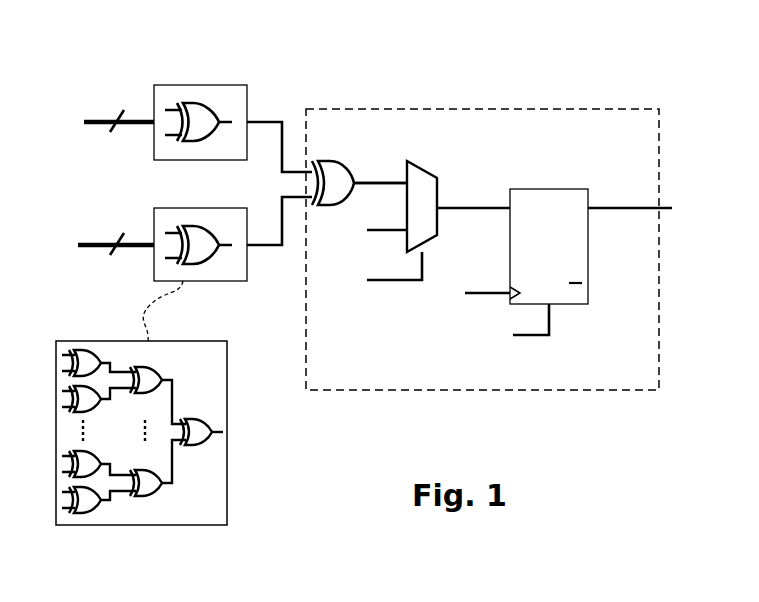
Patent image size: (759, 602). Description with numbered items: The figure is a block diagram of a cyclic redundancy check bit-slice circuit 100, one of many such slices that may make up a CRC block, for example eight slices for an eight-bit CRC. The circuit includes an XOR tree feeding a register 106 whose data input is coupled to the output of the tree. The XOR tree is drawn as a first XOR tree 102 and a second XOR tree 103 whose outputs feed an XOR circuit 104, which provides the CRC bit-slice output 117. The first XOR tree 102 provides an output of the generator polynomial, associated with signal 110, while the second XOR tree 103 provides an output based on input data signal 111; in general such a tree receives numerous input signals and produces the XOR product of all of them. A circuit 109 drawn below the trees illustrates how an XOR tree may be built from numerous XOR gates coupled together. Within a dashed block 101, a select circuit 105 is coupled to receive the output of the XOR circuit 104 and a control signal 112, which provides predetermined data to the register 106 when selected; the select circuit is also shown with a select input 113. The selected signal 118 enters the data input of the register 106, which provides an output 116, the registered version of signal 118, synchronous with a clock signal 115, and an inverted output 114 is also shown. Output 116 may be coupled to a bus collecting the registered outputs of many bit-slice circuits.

The CRC bit-slice circuit 100 is at (716, 52).
The dashed block 101 is at (512, 109).
The first XOR tree 102 is at (222, 85).
The second XOR tree 103 is at (210, 208).
The XOR circuit 104 is at (328, 166).
The select circuit 105 is at (437, 178).
The register 106 is at (518, 189).
The circuit 109 is at (227, 452).
The signal 110 is at (98, 130).
The signal 111 is at (94, 253).
The signal 112 is at (382, 230).
The multiplexer select input 113 is at (390, 282).
The inverted output 114 is at (538, 335).
The clock signal 115 is at (482, 293).
The output 116 is at (610, 208).
The CRC bit-slice output 117 is at (374, 182).
The signal 118 is at (462, 212).